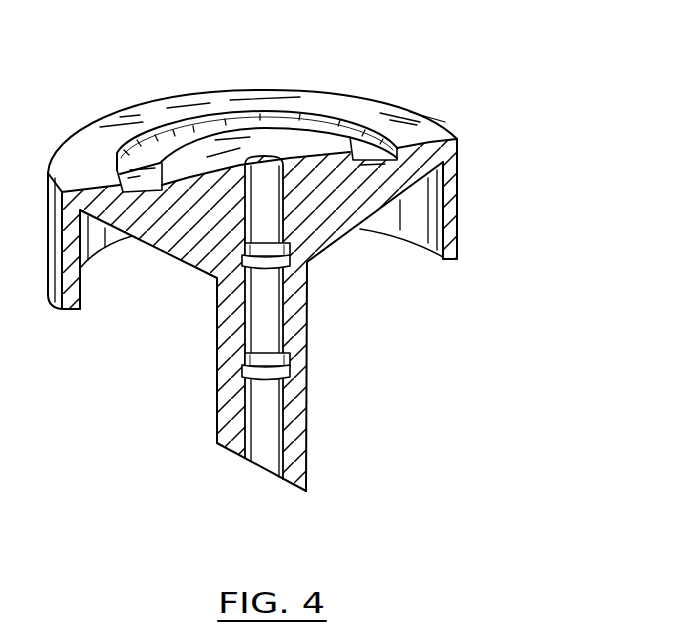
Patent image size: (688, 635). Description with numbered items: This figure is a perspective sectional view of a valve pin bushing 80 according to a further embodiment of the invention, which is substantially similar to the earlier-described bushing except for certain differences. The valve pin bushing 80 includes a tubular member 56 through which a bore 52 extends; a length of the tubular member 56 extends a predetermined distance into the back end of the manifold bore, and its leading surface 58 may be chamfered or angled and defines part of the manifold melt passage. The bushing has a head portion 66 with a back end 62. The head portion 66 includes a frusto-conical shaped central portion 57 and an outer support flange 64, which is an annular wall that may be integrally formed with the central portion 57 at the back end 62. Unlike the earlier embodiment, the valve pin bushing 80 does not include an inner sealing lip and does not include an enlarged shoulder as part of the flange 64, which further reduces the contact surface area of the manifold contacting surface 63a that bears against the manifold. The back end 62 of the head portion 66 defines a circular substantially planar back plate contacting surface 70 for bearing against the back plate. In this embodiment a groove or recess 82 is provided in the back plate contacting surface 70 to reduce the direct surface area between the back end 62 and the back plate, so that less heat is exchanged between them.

The bore 52 is at (275, 407).
The tubular member 56 is at (236, 290).
The central portion 57 is at (316, 234).
The leading surface 58 is at (288, 484).
The back end 62 is at (340, 93).
The manifold contacting surface 63a is at (63, 312).
The outer support flange 64 is at (458, 222).
The head portion 66 is at (577, 79).
The back plate contacting surface 70 is at (247, 100).
The valve pin bushing 80 is at (439, 101).
The groove or recess 82 is at (152, 152).